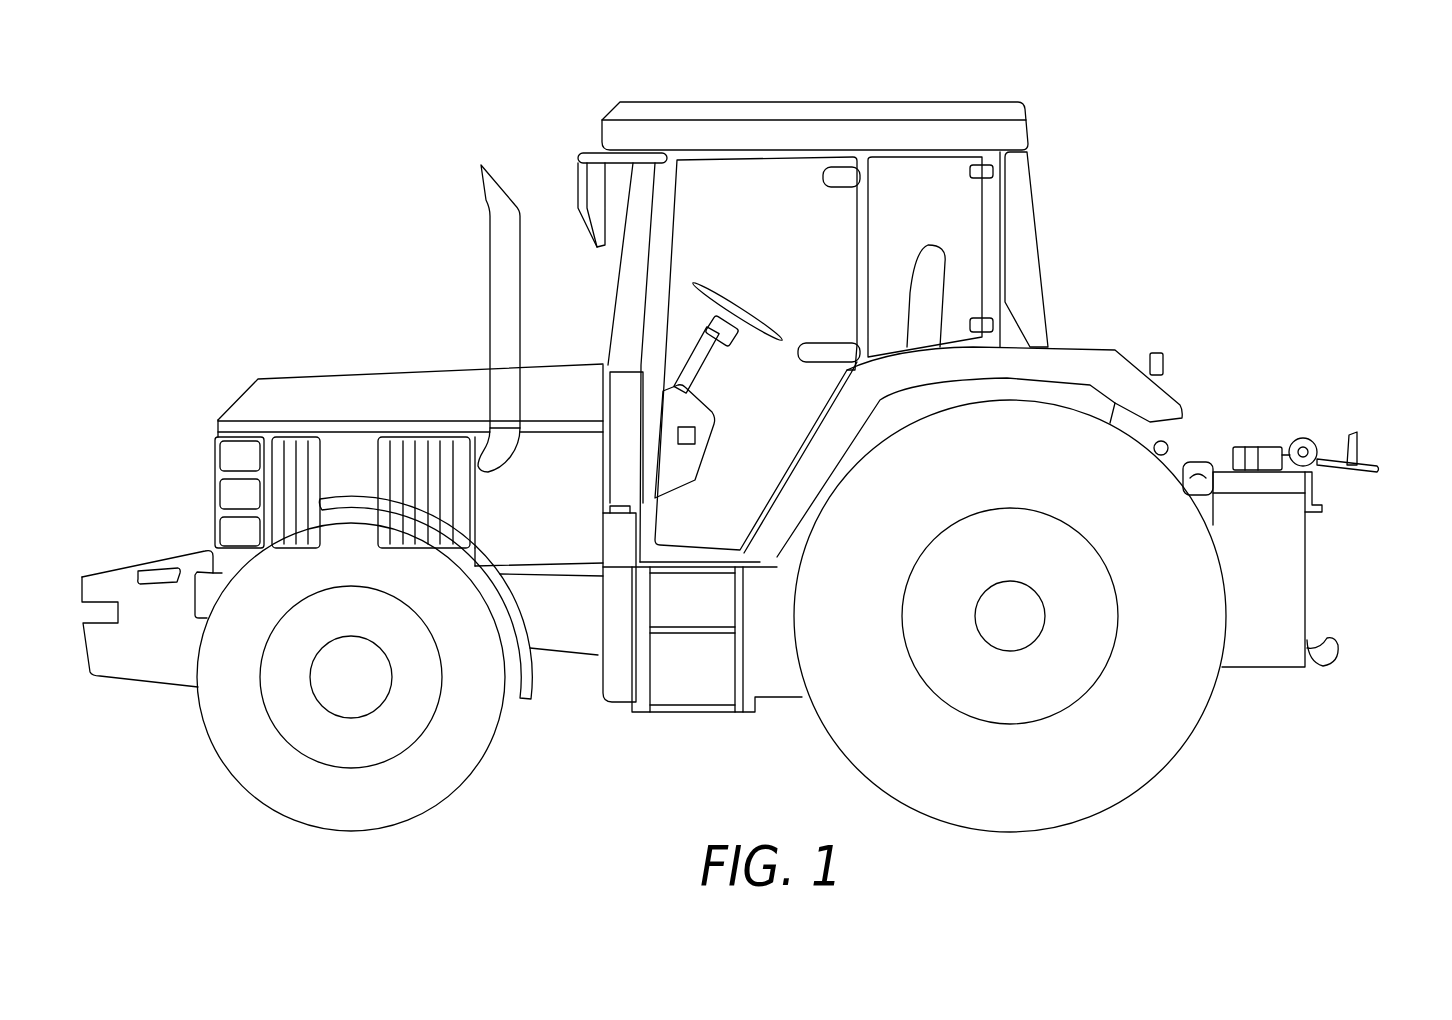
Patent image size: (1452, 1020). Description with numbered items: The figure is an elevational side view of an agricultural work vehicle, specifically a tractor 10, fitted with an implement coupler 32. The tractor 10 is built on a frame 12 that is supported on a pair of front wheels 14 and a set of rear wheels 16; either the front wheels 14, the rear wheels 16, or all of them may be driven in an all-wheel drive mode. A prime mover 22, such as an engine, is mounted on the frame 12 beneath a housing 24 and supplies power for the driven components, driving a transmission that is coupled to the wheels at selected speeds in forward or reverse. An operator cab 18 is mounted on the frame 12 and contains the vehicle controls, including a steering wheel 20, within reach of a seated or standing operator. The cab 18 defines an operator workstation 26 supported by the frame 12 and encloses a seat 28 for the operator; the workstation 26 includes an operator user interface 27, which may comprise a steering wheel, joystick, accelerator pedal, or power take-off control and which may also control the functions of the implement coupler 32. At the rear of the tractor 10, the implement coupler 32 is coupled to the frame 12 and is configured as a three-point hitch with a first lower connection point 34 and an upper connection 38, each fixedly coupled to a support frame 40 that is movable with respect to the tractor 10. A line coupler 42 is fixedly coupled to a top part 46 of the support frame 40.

The tractor 10 is at (1230, 178).
The frame 12 is at (565, 648).
The front wheels 14 is at (447, 778).
The rear wheels 16 is at (1140, 775).
The operator cab 18 is at (980, 135).
The steering wheel 20 is at (695, 285).
The prime mover 22 is at (440, 455).
The housing 24 is at (285, 338).
The operator workstation 26 is at (680, 475).
The operator user interface 27 is at (700, 437).
The seat 28 is at (937, 252).
The implement coupler 32 is at (1317, 422).
The first lower connection point 34 is at (1323, 658).
The upper connection 38 is at (1350, 450).
The support frame 40 is at (1275, 580).
The line coupler 42 is at (1300, 440).
The top part 46 is at (1228, 480).